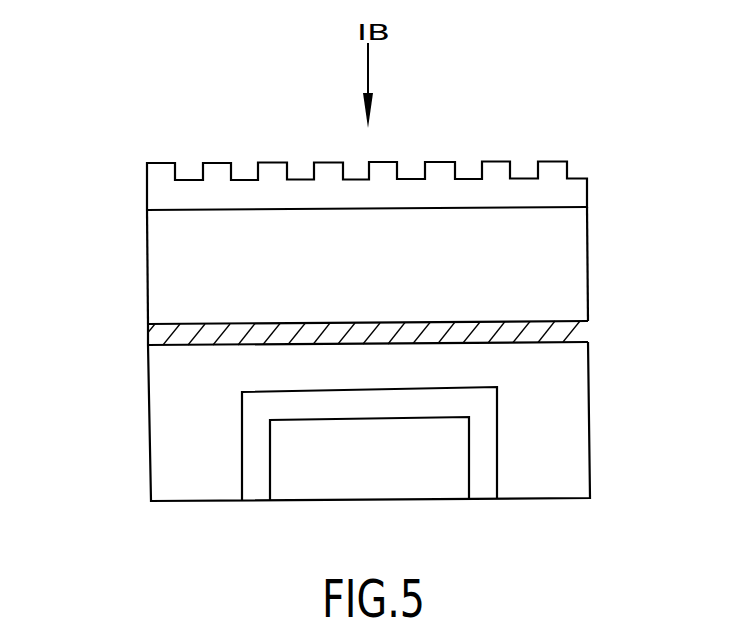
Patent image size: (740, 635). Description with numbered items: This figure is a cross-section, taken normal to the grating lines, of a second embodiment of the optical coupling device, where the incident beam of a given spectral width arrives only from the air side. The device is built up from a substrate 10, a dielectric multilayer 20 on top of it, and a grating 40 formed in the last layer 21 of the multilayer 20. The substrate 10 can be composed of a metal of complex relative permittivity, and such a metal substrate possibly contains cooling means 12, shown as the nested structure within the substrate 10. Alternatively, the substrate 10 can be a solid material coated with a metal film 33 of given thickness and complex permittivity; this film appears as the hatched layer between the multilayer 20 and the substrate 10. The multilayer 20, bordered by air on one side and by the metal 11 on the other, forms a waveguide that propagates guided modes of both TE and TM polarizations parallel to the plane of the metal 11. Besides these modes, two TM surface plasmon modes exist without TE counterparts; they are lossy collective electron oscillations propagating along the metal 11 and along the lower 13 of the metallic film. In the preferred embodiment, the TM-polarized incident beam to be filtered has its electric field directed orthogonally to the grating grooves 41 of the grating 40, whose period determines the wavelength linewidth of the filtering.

The substrate 10 is at (564, 431).
The metal 11 is at (600, 316).
The cooling means 12 is at (255, 486).
The lower of the metallic film 13 is at (600, 345).
The multilayer 20 is at (553, 258).
The last layer 21 is at (136, 192).
The metal film 33 is at (137, 346).
The grating 40 is at (356, 135).
The grating grooves 41 is at (518, 150).